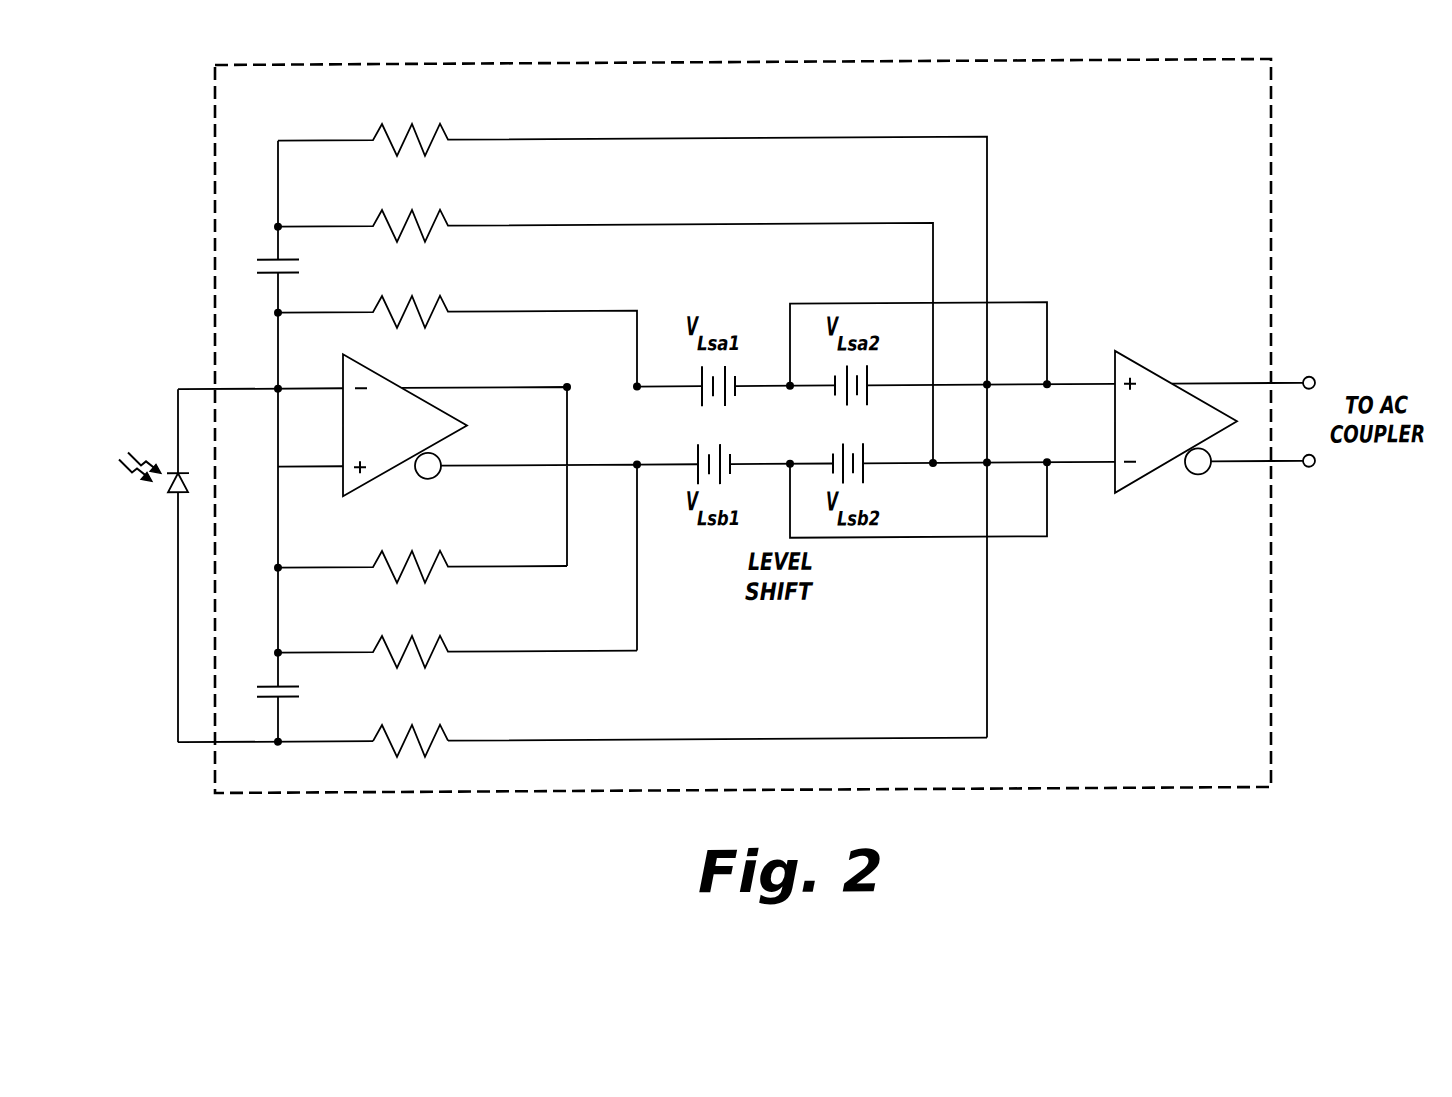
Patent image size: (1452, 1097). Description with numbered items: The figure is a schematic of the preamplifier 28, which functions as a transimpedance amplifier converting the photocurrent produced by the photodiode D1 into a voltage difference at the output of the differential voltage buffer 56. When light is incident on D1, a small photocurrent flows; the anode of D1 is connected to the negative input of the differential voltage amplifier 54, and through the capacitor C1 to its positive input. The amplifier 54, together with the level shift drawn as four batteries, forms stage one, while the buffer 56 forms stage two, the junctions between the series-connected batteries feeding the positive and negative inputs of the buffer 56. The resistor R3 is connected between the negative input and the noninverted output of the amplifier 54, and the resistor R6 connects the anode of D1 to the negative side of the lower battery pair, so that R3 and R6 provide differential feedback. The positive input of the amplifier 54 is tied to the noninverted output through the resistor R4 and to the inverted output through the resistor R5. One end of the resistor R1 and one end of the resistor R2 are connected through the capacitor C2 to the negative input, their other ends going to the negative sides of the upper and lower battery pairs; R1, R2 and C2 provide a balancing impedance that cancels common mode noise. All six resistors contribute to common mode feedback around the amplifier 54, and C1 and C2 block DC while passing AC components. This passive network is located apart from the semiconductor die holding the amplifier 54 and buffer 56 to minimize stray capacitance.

The preamplifier 28 is at (1352, 699).
The differential voltage amplifier 54 is at (365, 491).
The differential voltage buffer 56 is at (1137, 493).
The resistor R1 is at (632, 413).
The resistor R2 is at (605, 318).
The resistor R3 is at (457, 323).
The resistor R4 is at (422, 548).
The resistor R5 is at (457, 633).
The resistor R6 is at (410, 721).
The capacitor C1 is at (261, 689).
The capacitor C2 is at (262, 267).
The photodiode D1 is at (154, 485).